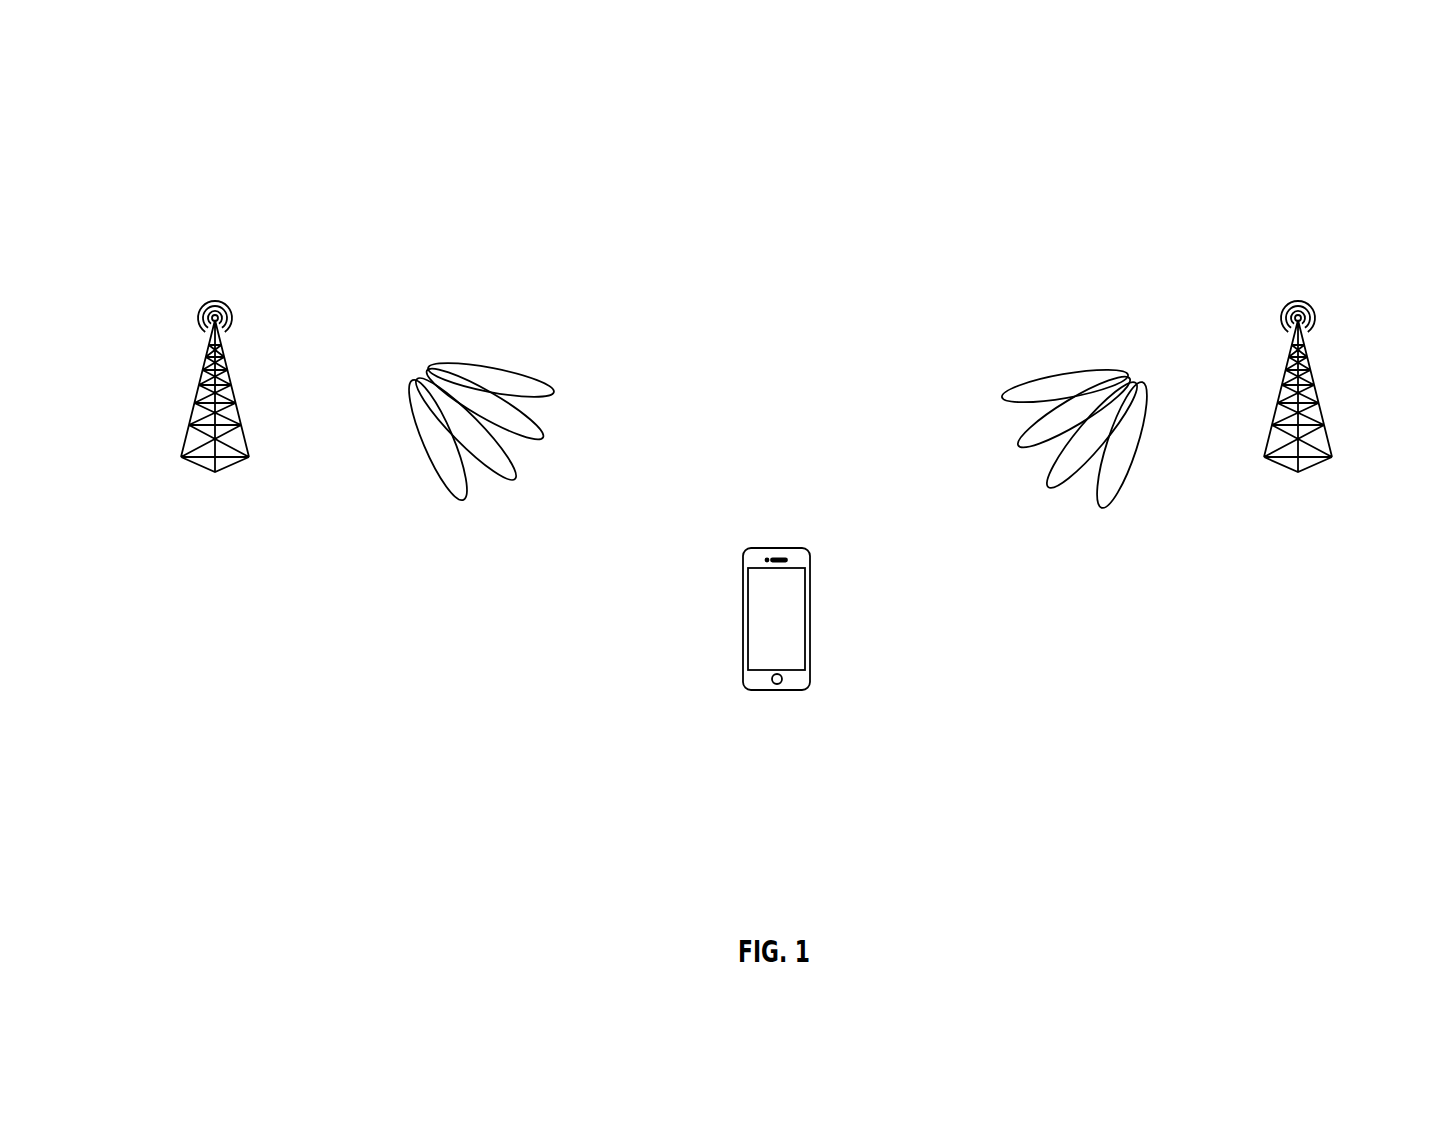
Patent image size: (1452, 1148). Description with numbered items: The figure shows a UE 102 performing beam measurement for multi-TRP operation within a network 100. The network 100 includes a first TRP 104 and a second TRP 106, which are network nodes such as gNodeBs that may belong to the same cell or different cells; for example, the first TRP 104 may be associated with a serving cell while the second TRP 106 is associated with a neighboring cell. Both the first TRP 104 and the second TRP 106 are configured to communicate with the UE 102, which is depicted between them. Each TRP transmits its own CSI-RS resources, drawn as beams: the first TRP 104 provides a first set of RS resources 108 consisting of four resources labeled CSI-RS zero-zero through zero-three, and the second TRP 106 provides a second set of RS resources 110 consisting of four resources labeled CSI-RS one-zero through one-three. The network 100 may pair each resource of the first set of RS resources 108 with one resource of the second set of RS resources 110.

The network 100 is at (1328, 110).
The UE 102 is at (762, 647).
The first TRP 104 is at (275, 512).
The second TRP 106 is at (1372, 512).
The first set of RS resources 108 is at (478, 342).
The second set of RS resources 110 is at (1047, 353).